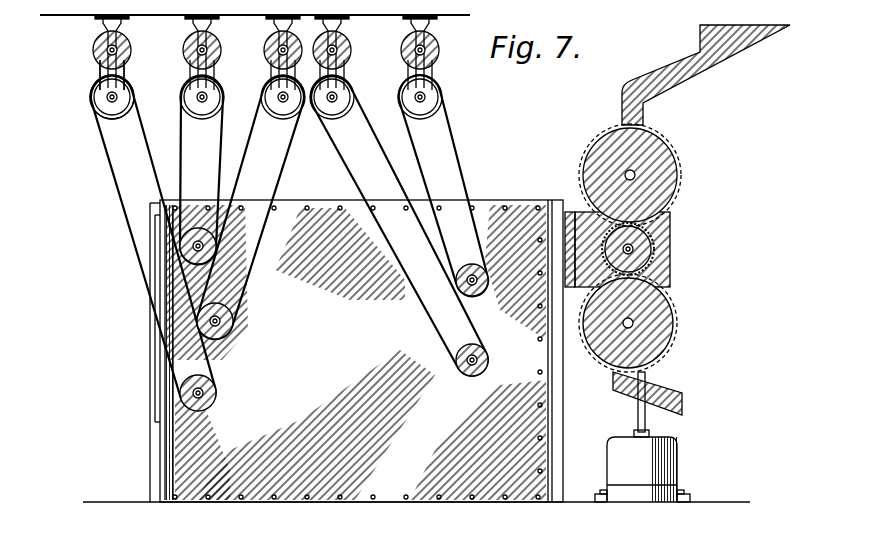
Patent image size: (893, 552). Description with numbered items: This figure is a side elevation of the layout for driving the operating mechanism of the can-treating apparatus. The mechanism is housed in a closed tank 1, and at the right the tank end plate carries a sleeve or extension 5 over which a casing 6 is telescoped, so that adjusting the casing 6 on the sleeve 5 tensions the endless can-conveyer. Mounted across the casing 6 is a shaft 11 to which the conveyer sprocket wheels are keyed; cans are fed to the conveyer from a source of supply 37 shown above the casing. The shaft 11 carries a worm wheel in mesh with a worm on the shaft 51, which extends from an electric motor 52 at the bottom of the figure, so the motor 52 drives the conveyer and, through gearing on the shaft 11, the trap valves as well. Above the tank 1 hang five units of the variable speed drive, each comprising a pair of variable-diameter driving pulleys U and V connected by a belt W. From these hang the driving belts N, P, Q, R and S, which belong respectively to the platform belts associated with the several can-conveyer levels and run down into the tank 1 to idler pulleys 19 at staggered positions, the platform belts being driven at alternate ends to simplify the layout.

The closed tank 1 is at (185, 462).
The sleeve or extension 5 is at (576, 212).
The casing 6 is at (672, 240).
The shaft 11 is at (633, 253).
The idler pulley 19 is at (210, 250).
The source of supply 37 is at (693, 63).
The shaft 51 is at (638, 413).
The electric motor 52 is at (678, 472).
The driving pulley U is at (95, 46).
The belt W is at (98, 72).
The driving pulley V is at (92, 102).
The driving belt S is at (153, 243).
The driving belt N is at (201, 170).
The driving belt Q is at (250, 207).
The driving belt R is at (399, 226).
The driving belt P is at (443, 185).